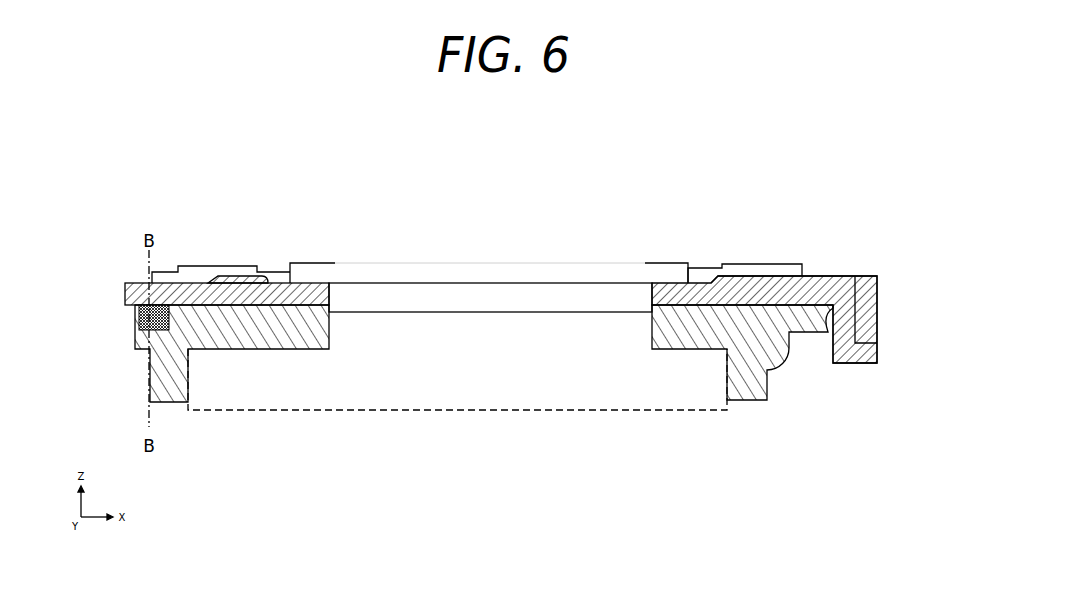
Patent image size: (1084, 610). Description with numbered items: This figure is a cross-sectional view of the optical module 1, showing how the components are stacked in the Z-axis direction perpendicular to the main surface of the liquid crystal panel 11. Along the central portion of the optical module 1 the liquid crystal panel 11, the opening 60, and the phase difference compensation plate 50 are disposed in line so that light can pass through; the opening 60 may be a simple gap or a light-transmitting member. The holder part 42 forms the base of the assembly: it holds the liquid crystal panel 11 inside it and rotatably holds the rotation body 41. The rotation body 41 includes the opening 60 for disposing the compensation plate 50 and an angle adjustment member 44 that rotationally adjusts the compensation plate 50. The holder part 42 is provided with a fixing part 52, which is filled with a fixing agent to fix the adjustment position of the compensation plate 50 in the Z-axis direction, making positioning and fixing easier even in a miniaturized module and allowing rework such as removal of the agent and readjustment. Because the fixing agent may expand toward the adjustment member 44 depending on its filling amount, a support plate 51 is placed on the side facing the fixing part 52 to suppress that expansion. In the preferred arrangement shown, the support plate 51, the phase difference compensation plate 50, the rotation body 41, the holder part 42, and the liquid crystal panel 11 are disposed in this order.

The optical module 1 is at (767, 190).
The liquid crystal panel 11 is at (615, 383).
The rotation body 41 is at (275, 280).
The holder part 42 is at (177, 402).
The angle adjustment member 44 is at (125, 288).
The phase difference compensation plate 50 is at (547, 275).
The support plate 51 is at (201, 266).
The fixing part 52 is at (138, 315).
The opening 60 is at (430, 292).